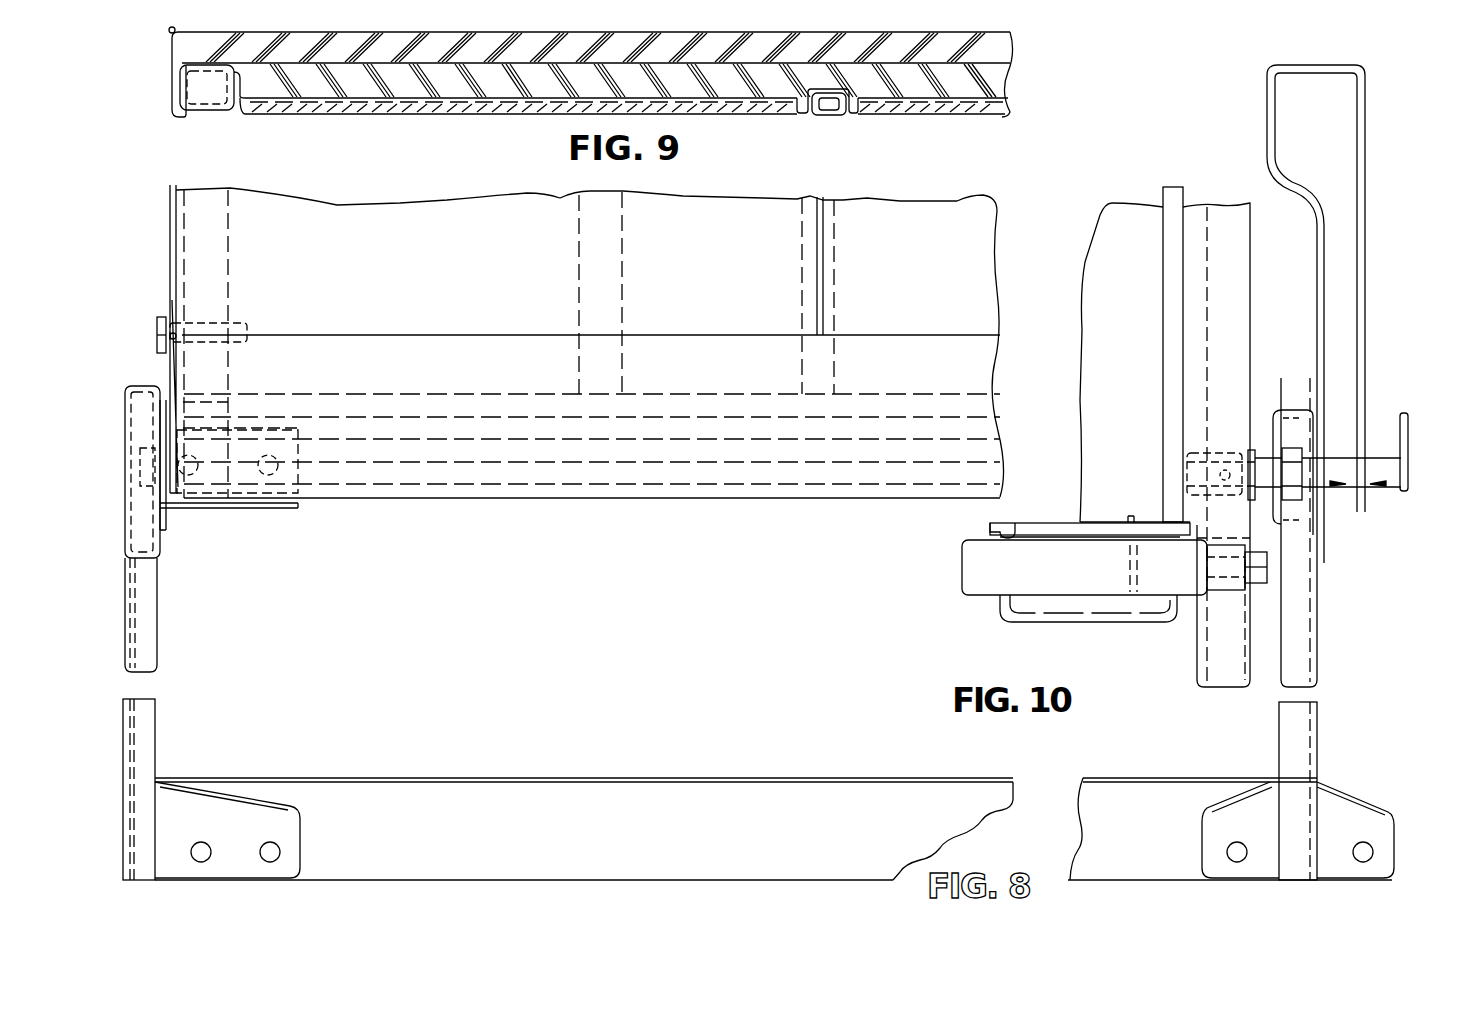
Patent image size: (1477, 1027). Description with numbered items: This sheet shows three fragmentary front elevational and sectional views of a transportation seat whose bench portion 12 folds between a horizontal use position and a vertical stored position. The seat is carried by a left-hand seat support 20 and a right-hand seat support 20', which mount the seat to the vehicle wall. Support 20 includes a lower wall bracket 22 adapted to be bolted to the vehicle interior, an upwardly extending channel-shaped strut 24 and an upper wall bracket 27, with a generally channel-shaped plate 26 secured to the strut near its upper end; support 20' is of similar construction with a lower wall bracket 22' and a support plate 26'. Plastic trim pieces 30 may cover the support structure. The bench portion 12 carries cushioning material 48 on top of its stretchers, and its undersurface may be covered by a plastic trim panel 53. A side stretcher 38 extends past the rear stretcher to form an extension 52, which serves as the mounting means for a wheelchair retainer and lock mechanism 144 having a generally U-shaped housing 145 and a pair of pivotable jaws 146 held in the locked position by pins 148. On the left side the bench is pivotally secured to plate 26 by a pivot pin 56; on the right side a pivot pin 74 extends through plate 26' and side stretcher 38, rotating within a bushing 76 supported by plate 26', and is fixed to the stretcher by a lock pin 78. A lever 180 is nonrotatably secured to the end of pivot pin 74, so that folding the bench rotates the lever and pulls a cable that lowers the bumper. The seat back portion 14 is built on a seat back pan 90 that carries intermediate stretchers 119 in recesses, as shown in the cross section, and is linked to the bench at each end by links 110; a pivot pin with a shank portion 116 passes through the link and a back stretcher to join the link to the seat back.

In FIG. 9, the seat back portion 14 is at (682, 30).
In FIG. 10, the seat back portion 14 is at (404, 244).
In FIG. 9, the seat back pan 90 is at (447, 118).
In FIG. 9, the intermediate stretchers 119 is at (820, 118).
In FIG. 10, the bench portion 12 is at (517, 318).
In FIG. 10, the cushioning material 48 is at (760, 355).
In FIG. 10, the shank portion 116 is at (245, 330).
In FIG. 10, the links 110 is at (160, 353).
In FIG. 10, the channel-shaped plate 26 is at (155, 372).
In FIG. 10, the plastic trim pieces 30 is at (126, 432).
In FIG. 10, the pivot pin 56 is at (182, 487).
In FIG. 10, the upper wall bracket 27 is at (297, 511).
In FIG. 10, the seat support 20 is at (198, 615).
In FIG. 10, the plastic trim panel 53 is at (1126, 352).
In FIG. 10, the side stretcher 38 is at (1225, 296).
In FIG. 10, the pivot pin 74 is at (1262, 386).
In FIG. 10, the bushing 76 is at (1290, 460).
In FIG. 10, the support plate 26' is at (1286, 454).
In FIG. 10, the lever 180 is at (1405, 412).
In FIG. 10, the lock pin 78 is at (1226, 465).
In FIG. 10, the wheelchair retainer and lock mechanism 144 is at (1048, 512).
In FIG. 10, the pivotable jaws 146 is at (1102, 532).
In FIG. 10, the pins 148 is at (990, 528).
In FIG. 10, the U-shaped housing 145 is at (972, 576).
In FIG. 10, the extension 52 is at (1212, 648).
In FIG. 10, the seat support 20' is at (1351, 558).
In FIG. 10, the channel-shaped strut 24 is at (1318, 663).
In FIG. 8, the channel-shaped strut 24 is at (155, 723).
In FIG. 8, the lower wall bracket 22 is at (237, 804).
In FIG. 8, the lower wall bracket 22' is at (1299, 795).